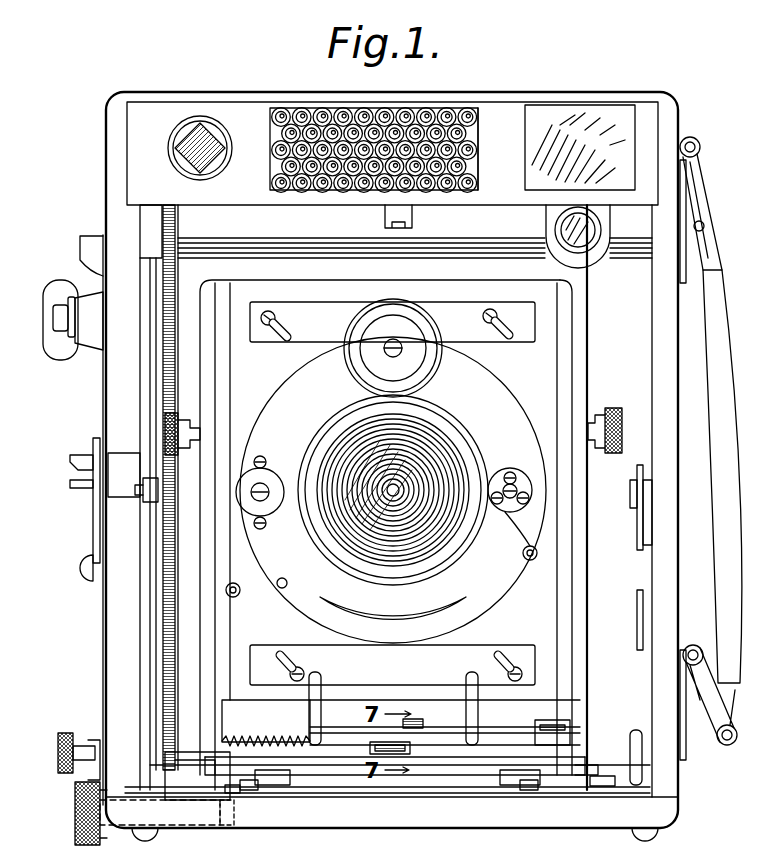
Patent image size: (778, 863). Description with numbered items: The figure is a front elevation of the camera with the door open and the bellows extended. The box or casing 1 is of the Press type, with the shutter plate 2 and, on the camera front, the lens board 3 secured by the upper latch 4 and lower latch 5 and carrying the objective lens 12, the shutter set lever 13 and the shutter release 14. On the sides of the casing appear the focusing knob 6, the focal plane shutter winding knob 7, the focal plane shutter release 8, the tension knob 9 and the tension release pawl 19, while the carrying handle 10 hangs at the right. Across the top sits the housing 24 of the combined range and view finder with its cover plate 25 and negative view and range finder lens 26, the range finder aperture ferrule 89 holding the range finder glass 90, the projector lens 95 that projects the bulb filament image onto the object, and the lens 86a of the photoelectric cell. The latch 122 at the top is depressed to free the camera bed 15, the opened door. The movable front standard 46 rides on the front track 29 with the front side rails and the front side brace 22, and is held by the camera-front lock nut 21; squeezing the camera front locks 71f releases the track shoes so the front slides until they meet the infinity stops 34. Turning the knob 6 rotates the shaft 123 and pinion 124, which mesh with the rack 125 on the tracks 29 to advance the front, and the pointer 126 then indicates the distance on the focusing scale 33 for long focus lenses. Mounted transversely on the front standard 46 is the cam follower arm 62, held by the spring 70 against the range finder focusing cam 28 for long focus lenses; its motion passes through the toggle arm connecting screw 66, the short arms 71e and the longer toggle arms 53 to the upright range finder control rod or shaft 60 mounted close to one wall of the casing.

The box or casing 1 is at (668, 415).
The shutter plate 2 is at (103, 400).
The lens board 3 is at (540, 372).
The upper latch 4 is at (458, 310).
The lower latch 5 is at (488, 650).
The focusing knob 6 is at (80, 795).
The focal plane shutter winding knob 7 is at (55, 284).
The release for the focal plane shutter 8 is at (80, 565).
The tension knob 9 is at (58, 750).
The carrying handle 10 is at (725, 557).
The objective lens 12 is at (440, 470).
The shutter set lever 13 is at (525, 530).
The shutter release 14 is at (256, 600).
The camera bed 15 is at (606, 818).
The tension release pawl 19 is at (100, 772).
The camera-front lock nut 21 is at (165, 432).
The front side brace 22 is at (156, 630).
The range and view finder housing 24 is at (251, 114).
The cover plate 25 is at (514, 100).
The view and range finder lens 26 is at (600, 108).
The range finder focusing cam 28 is at (165, 788).
The front track 29 is at (257, 786).
The focusing scale 33 is at (606, 776).
The infinity stops 34 is at (276, 777).
The front standard 46 is at (445, 762).
The toggle arms 53 is at (540, 732).
The range finder control rod or shaft 60 is at (160, 346).
The cam follower arm 62 is at (434, 740).
The toggle arm connecting screw 66 is at (413, 718).
The spring 70 is at (238, 738).
The short arms 71e is at (338, 732).
The camera front locks 71f is at (322, 690).
The photoelectric cell lens 86a is at (438, 108).
The range finder aperture ferrule 89 is at (172, 145).
The range finder glass 90 is at (200, 118).
The projector lens 95 is at (586, 240).
The latch 122 is at (414, 215).
The shaft 123 is at (182, 824).
The pinion 124 is at (229, 824).
The rack 125 is at (240, 794).
The pointer 126 is at (598, 766).